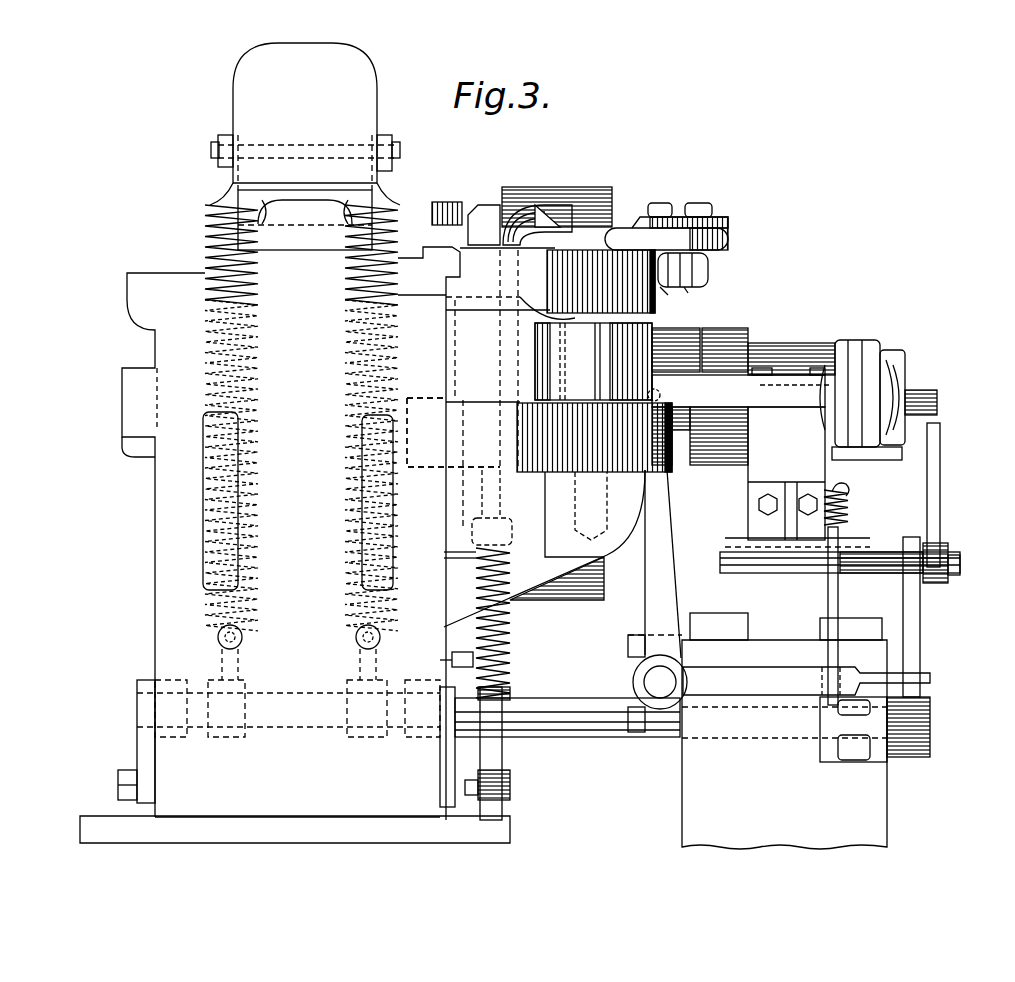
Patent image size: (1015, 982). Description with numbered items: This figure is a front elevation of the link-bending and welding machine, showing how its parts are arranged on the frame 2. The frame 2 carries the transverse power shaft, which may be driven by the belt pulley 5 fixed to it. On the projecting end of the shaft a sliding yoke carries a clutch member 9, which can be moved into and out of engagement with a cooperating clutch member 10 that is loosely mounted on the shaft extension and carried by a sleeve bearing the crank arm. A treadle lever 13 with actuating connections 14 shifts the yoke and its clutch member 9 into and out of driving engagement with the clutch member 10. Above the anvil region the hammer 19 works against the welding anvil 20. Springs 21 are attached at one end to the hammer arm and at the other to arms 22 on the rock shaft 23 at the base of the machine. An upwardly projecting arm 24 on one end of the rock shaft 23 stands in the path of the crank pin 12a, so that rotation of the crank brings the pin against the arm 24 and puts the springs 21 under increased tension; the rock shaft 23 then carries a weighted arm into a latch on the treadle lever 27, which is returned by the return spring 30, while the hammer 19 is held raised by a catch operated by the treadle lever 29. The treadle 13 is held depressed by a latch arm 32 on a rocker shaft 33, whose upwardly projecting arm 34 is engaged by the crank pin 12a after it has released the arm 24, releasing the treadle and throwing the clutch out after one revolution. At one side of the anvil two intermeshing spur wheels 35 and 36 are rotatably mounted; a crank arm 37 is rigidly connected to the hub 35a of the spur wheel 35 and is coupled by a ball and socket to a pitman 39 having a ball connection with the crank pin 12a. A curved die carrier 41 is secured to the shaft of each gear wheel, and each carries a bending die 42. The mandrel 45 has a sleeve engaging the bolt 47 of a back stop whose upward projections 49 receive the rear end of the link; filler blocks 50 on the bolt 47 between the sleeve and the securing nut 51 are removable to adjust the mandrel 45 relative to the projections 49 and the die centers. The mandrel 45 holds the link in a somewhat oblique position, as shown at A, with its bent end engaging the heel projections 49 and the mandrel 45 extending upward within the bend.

The frame 2 is at (160, 500).
The belt pulley 5 is at (583, 598).
The clutch member 9 is at (676, 472).
The clutch member 10 is at (727, 470).
The crank pin 12a is at (937, 400).
The treadle lever 13 is at (806, 681).
The actuating connections 14 is at (668, 600).
The hammer 19 is at (305, 124).
The welding anvil 20 is at (305, 220).
The springs 21 is at (252, 498).
The arms 22 is at (237, 668).
The rock shaft 23 is at (586, 727).
The upwardly projecting arm 24 is at (920, 625).
The treadle lever 27 is at (503, 672).
The treadle lever 29 is at (455, 668).
The return spring 30 is at (510, 640).
The latch arm 32 is at (838, 612).
The rocker shaft 33 is at (873, 560).
The upwardly projecting arm 34 is at (942, 490).
The spur wheel 35 is at (553, 462).
The hub 35a is at (520, 365).
The spur wheel 36 is at (434, 465).
The crank arm 37 is at (741, 387).
The pitman 39 is at (870, 342).
The curved die carrier 41 is at (436, 212).
The bending die 42 is at (440, 230).
The mandrel 45 is at (552, 215).
The bolt 47 is at (718, 270).
The upward projections 49 is at (490, 213).
The filler blocks 50 is at (668, 292).
The securing nut 51 is at (690, 288).
The oblique position of link A is at (512, 215).